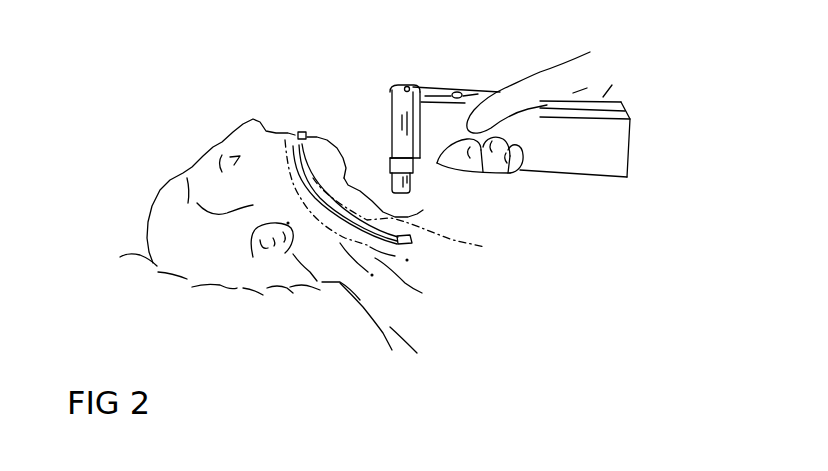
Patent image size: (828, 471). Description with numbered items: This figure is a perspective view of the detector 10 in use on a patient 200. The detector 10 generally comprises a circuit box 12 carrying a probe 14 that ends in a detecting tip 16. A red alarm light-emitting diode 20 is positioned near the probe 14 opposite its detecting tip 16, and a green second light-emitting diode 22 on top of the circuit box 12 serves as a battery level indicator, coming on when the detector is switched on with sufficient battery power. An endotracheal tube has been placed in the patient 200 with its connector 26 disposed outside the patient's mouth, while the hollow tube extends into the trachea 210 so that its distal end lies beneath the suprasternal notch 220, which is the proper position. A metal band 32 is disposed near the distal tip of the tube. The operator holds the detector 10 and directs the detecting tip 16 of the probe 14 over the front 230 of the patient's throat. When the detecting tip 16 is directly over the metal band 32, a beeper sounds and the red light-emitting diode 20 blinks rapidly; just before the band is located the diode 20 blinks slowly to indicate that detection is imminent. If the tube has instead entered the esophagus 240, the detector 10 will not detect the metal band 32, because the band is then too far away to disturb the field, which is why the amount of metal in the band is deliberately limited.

The detector 10 is at (580, 176).
The circuit box 12 is at (630, 145).
The probe 14 is at (424, 176).
The detecting tip 16 is at (400, 193).
The alarm light-emitting diode 20 is at (407, 85).
The second light-emitting diode 22 is at (458, 91).
The connector 26 is at (297, 131).
The metal band 32 is at (397, 252).
The patient 200 is at (223, 275).
The trachea 210 is at (317, 179).
The suprasternal notch 220 is at (402, 208).
The front of the patient's throat 230 is at (365, 190).
The esophagus 240 is at (386, 265).